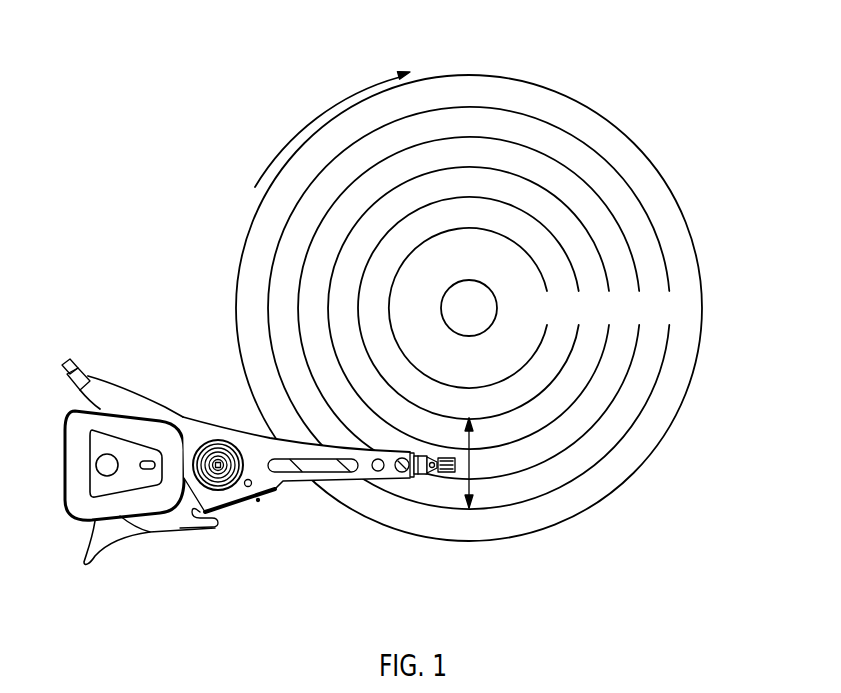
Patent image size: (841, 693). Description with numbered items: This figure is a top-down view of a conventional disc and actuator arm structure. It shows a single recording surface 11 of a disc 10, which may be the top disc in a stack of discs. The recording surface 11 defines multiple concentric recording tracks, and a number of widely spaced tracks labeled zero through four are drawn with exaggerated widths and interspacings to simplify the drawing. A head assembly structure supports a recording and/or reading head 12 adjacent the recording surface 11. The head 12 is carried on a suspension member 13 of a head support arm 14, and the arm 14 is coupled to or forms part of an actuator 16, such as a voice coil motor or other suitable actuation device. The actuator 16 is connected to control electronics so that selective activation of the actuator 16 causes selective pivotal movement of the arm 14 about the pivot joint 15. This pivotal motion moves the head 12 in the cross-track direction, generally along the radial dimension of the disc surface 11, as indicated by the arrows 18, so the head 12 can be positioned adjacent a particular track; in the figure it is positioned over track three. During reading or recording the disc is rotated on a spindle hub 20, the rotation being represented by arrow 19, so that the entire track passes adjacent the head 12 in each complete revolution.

The disc 10 is at (703, 310).
The recording surface 11 is at (498, 122).
The head 12 is at (455, 474).
The suspension member 13 is at (345, 482).
The head support arm 14 is at (275, 483).
The pivot joint 15 is at (219, 468).
The actuator 16 is at (203, 432).
The arrows 18 is at (472, 462).
The arrow 19 is at (292, 137).
The spindle hub 20 is at (470, 297).